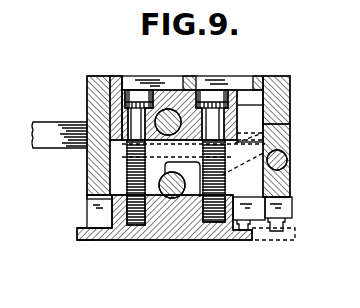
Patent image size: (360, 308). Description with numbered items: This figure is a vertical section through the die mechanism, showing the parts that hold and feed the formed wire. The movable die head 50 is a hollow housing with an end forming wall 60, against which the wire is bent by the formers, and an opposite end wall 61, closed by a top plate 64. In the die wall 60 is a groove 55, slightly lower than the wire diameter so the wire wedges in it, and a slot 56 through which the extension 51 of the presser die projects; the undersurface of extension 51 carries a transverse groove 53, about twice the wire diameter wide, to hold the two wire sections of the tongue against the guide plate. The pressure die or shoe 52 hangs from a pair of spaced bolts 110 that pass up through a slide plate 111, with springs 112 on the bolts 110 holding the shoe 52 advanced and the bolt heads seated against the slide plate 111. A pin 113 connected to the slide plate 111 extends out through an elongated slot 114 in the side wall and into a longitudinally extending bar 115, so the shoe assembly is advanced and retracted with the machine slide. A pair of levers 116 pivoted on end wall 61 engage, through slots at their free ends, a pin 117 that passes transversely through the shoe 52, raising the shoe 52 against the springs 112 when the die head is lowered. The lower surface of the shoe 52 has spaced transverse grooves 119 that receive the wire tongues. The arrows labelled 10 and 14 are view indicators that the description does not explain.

The section line / direction indicator 10 is at (152, 62).
The section line / direction indicator 14 is at (70, 239).
The die head 50 is at (297, 162).
The extension 51 is at (98, 240).
The pressure die or shoe 52 is at (193, 240).
The transverse groove 53 is at (87, 240).
The groove 55 is at (92, 219).
The slot 56 is at (92, 203).
The end forming wall 60 is at (87, 94).
The end wall 61 is at (290, 97).
The top plate 64 is at (256, 82).
The bolts 110 is at (133, 100).
The slide plate 111 is at (234, 118).
The springs 112 is at (124, 163).
The pin 113 is at (196, 86).
The elongated slot 114 is at (292, 142).
The bar 115 is at (53, 148).
The levers 116 is at (292, 188).
The pin 117 is at (186, 242).
The transverse grooves 119 is at (214, 238).